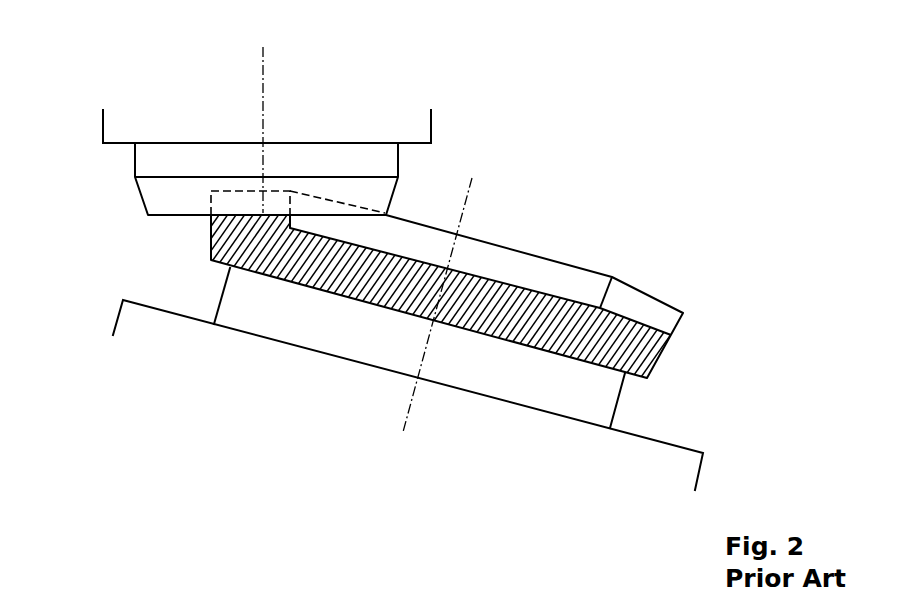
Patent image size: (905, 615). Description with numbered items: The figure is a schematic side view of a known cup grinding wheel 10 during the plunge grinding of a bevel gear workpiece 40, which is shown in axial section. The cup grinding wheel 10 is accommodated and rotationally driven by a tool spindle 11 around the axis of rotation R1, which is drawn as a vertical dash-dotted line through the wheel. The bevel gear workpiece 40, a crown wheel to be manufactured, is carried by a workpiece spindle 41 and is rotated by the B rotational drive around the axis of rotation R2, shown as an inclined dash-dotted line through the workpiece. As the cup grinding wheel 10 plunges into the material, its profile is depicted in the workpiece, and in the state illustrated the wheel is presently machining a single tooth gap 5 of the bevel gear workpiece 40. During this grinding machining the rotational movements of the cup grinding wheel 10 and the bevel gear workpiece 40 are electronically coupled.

The tooth gap 5 is at (225, 203).
The cup grinding wheel 10 is at (135, 190).
The tool spindle 11 is at (100, 120).
The bevel gear workpiece 40 is at (664, 353).
The workpiece spindle 41 is at (686, 455).
The axis of rotation of the tool spindle R1 is at (263, 116).
The axis of rotation of the bevel gear workpiece R2 is at (428, 322).